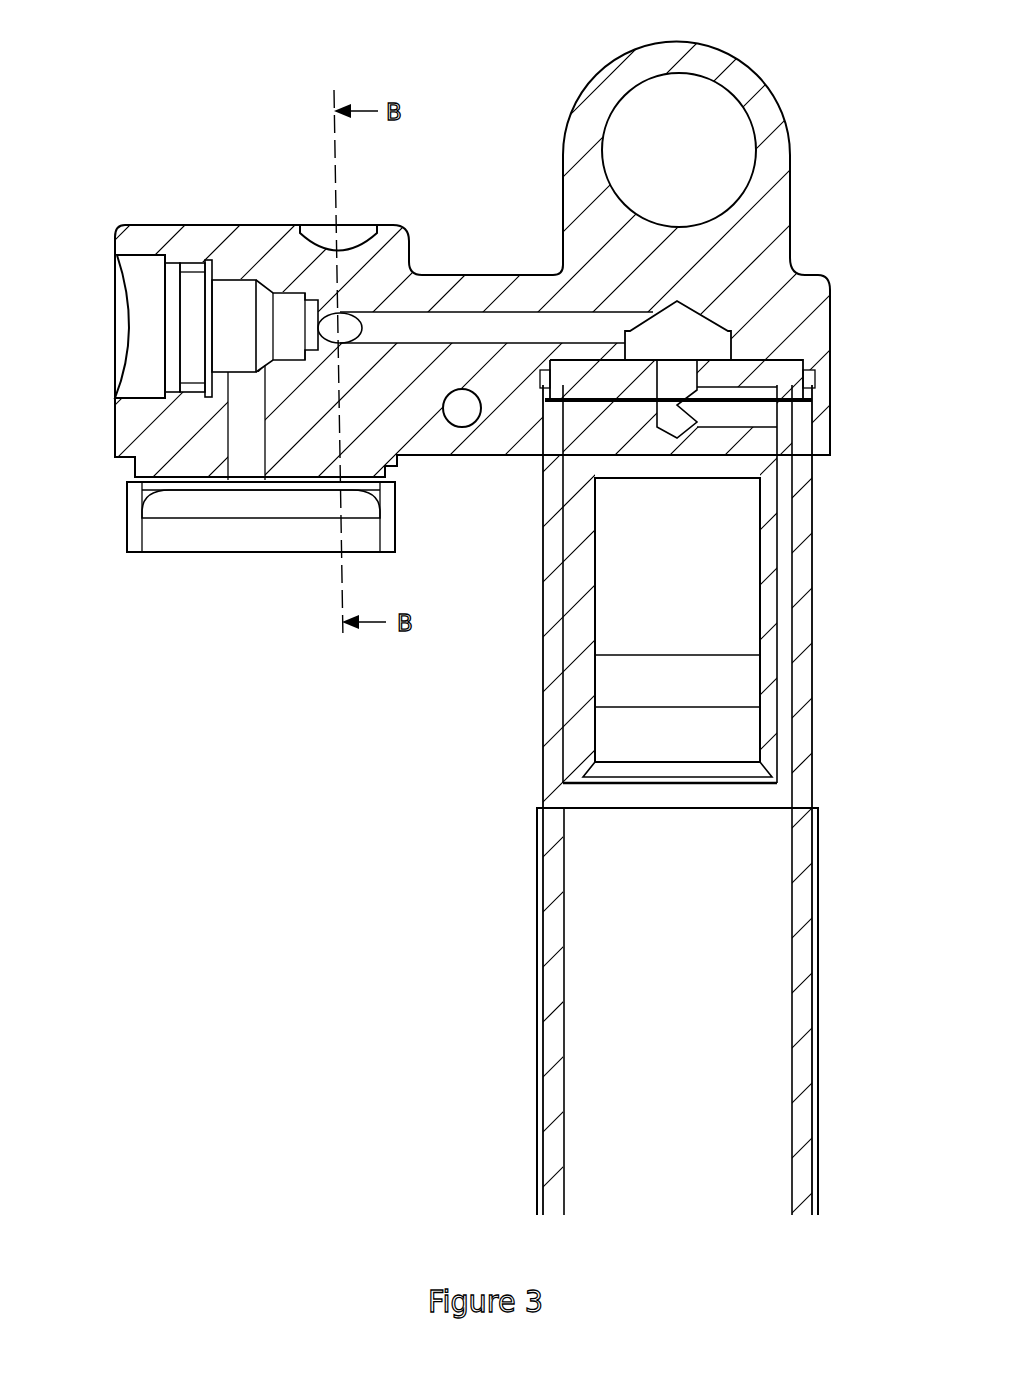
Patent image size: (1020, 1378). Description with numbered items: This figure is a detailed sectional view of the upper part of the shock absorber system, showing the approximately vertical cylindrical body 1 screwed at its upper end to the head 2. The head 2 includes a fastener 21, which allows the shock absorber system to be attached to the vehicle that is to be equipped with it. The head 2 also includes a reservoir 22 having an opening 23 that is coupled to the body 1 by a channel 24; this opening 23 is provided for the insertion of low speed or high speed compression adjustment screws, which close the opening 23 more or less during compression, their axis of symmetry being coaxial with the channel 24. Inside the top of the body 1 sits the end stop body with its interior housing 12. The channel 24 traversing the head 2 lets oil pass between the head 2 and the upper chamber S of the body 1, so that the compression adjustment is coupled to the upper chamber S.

The cylindrical body 1 is at (803, 962).
The head 2 is at (753, 260).
The interior housing 12 is at (708, 591).
The fastener 21 is at (690, 118).
The reservoir 22 is at (220, 227).
The opening 23 is at (148, 309).
The channel 24 is at (440, 322).
The upper chamber S is at (604, 951).